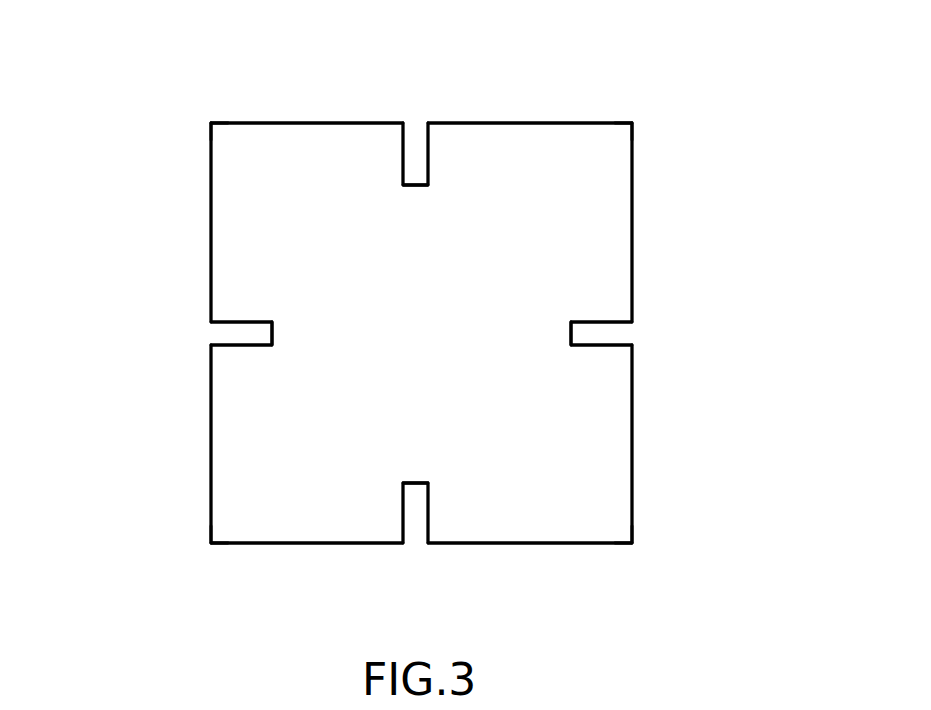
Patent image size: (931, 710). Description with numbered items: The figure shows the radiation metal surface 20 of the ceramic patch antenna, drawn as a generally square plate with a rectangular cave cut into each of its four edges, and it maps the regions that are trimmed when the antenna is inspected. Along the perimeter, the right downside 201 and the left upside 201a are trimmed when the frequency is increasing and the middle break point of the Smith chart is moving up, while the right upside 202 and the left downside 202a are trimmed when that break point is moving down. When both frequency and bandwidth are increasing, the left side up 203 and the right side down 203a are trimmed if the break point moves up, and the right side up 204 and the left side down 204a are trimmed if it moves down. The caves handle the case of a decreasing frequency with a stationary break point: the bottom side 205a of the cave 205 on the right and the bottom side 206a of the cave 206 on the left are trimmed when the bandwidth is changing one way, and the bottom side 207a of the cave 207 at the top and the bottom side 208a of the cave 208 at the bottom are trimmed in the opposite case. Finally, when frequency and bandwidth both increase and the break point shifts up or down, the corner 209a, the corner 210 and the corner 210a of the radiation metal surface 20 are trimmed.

The radiation metal surface 20 is at (700, 251).
The right downside 201 is at (577, 545).
The left upside 201a is at (308, 123).
The right upside 202 is at (588, 123).
The left downside 202a is at (258, 545).
The left side up 203 is at (210, 167).
The right side down 203a is at (633, 502).
The right side up 204 is at (632, 192).
The left side down 204a is at (210, 468).
The cave 205 is at (615, 333).
The bottom side of cave 205a is at (571, 327).
The cave 206 is at (230, 335).
The bottom side of cave 206a is at (272, 337).
The cave 207 is at (415, 142).
The bottom side of cave 207a is at (420, 183).
The cave 208 is at (420, 527).
The bottom side of cave 208a is at (405, 486).
The corner 209a is at (211, 123).
The corner 210 is at (633, 123).
The corner 210a is at (210, 543).